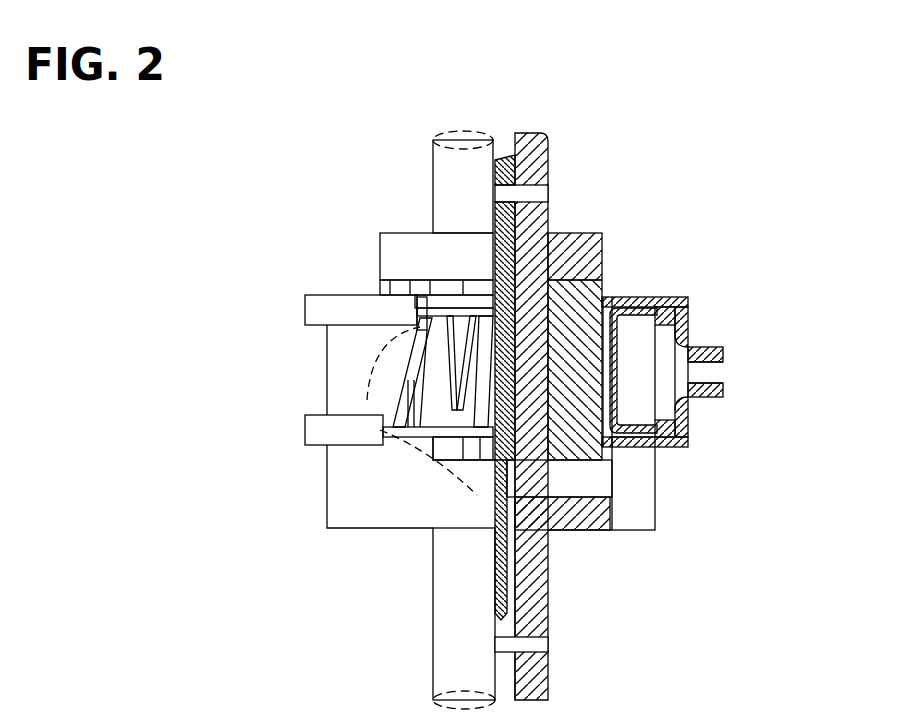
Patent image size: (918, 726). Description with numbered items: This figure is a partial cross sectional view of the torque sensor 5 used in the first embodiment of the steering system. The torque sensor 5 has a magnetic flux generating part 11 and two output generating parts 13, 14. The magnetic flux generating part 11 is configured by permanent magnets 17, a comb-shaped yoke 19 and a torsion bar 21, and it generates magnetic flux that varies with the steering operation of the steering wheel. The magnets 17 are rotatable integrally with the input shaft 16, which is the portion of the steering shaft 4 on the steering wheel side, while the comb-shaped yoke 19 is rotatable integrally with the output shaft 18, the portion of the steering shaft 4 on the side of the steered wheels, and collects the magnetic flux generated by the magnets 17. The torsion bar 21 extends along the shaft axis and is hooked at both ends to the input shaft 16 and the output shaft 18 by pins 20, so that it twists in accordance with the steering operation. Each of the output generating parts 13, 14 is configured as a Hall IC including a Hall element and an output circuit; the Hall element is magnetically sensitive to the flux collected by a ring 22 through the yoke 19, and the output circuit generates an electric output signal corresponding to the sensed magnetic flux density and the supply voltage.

The torque sensor 5 is at (283, 114).
The steering shaft 4 is at (416, 416).
The input shaft 16 is at (450, 175).
The output shaft 18 is at (452, 633).
The pin 20 is at (540, 192).
The magnetic flux generating part 11 is at (509, 387).
The torsion bar 21 is at (500, 253).
The permanent magnet 17 is at (450, 285).
The comb-shaped yoke 19 is at (420, 382).
The ring 22 is at (690, 430).
The output generating part 13 is at (759, 372).
The output generating part 14 is at (713, 373).